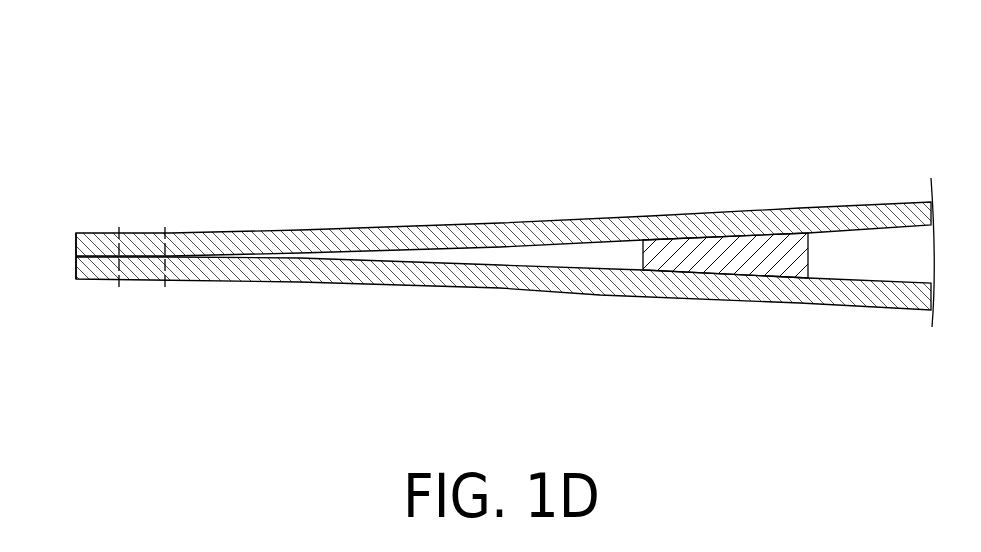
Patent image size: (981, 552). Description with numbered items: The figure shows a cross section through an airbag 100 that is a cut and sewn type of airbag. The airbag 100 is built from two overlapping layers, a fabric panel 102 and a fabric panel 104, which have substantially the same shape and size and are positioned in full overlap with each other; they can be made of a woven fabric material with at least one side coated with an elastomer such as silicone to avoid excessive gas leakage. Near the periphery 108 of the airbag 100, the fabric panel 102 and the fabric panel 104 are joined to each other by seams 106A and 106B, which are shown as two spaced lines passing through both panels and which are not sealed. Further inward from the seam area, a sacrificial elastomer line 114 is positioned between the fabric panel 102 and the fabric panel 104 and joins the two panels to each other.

The airbag 100 is at (761, 67).
The fabric panel 102 is at (596, 221).
The fabric panel 104 is at (598, 294).
The seam 106A is at (118, 231).
The seam 106B is at (164, 229).
The periphery 108 is at (76, 244).
The sacrificial elastomer line 114 is at (810, 258).